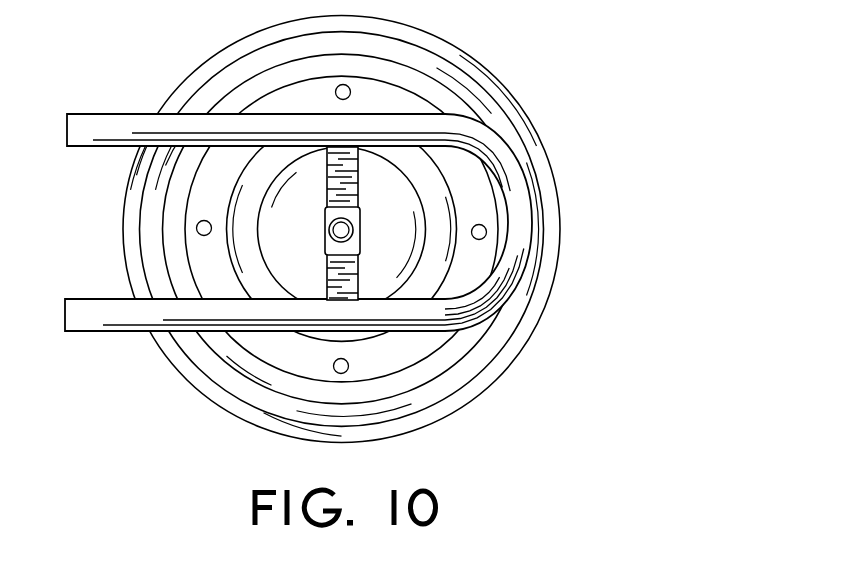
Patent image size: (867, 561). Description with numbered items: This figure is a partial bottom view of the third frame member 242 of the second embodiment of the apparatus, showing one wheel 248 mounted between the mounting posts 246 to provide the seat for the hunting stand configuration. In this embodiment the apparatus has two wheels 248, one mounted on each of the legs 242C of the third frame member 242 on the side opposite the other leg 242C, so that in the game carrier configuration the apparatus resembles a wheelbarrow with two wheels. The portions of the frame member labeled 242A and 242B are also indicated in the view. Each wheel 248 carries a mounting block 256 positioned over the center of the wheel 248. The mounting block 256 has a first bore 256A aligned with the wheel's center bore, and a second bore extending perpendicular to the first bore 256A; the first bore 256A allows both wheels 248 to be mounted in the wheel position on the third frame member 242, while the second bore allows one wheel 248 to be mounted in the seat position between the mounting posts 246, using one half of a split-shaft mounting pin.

The third frame member 242 is at (293, 122).
The bend portion of yoke bracket 242A is at (532, 250).
The lower arm of yoke bracket 242B is at (75, 318).
The leg 242C is at (205, 323).
The mounting posts 246 is at (352, 282).
The wheel 248 is at (478, 364).
The mounting block 256 is at (357, 213).
The first bore 256A is at (350, 228).